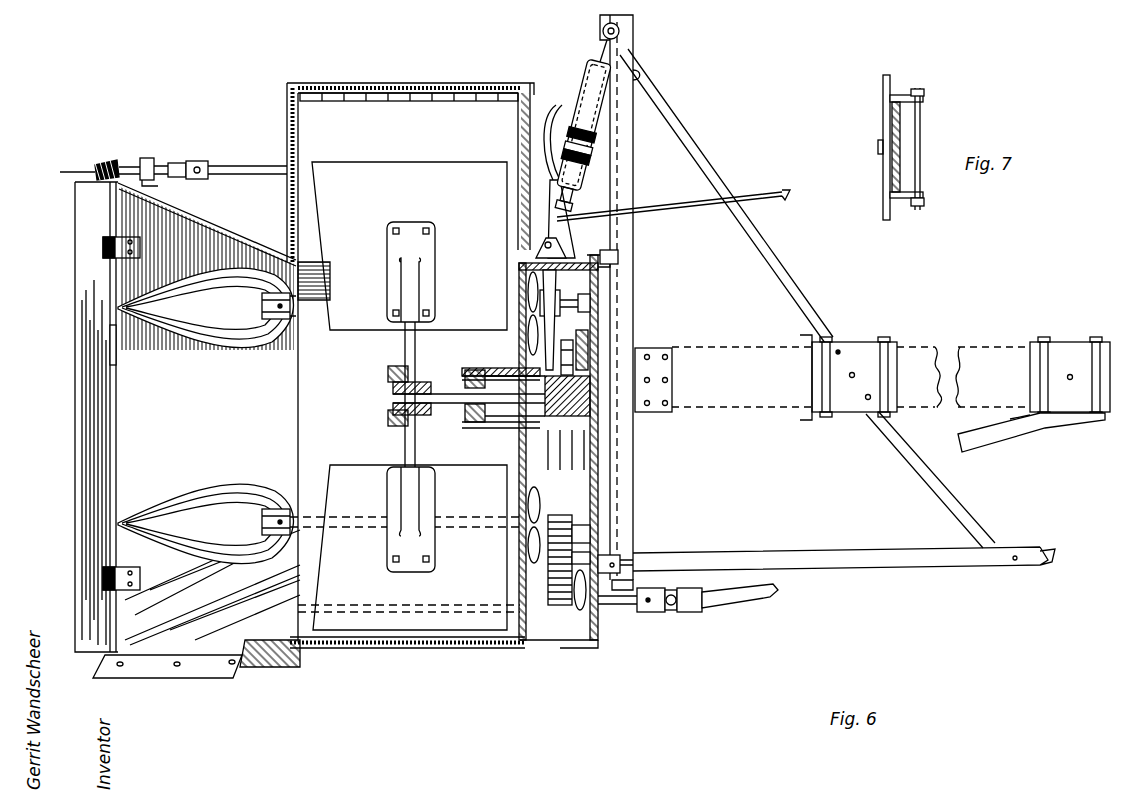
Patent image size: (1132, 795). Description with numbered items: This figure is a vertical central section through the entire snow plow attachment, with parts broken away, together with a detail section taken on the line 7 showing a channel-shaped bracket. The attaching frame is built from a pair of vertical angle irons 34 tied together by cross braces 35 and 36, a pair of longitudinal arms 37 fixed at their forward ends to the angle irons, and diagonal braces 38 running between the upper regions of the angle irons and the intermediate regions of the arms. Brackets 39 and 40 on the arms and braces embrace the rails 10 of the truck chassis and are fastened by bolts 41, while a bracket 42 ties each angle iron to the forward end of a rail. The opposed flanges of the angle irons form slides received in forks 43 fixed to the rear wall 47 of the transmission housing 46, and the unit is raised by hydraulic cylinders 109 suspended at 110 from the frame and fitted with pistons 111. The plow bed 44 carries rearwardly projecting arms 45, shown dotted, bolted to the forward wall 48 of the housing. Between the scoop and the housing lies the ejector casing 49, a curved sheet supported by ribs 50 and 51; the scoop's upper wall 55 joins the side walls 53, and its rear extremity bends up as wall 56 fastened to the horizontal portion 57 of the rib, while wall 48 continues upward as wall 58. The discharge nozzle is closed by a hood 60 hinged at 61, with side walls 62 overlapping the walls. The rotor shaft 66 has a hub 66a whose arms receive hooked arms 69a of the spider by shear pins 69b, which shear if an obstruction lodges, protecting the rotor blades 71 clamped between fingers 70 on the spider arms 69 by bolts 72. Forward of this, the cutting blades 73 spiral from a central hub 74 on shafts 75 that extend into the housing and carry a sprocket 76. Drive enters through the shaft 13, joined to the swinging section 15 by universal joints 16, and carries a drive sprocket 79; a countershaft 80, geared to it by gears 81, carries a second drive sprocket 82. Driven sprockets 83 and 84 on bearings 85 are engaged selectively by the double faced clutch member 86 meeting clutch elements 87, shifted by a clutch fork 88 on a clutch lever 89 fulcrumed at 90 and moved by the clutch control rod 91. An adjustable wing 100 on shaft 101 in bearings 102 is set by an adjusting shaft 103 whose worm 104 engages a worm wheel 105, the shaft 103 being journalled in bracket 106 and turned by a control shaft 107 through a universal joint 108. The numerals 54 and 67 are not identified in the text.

In FIG. 6, the section line 7 is at (835, 340).
In FIG. 6, the rails 10 is at (748, 410).
In FIG. 7, the rails 10 is at (900, 183).
In FIG. 6, the shaft 13 is at (610, 606).
In FIG. 6, the swinging section 15 is at (738, 596).
In FIG. 6, the universal joints 16 is at (660, 612).
In FIG. 6, the angle irons 34 is at (633, 236).
In FIG. 6, the cross brace 35 is at (633, 18).
In FIG. 6, the cross brace 36 is at (660, 553).
In FIG. 6, the longitudinal arms 37 is at (988, 440).
In FIG. 6, the diagonal braces 38 is at (770, 250).
In FIG. 7, the diagonal braces 38 is at (883, 112).
In FIG. 6, the brackets 39 is at (1058, 340).
In FIG. 6, the brackets 40 is at (860, 342).
In FIG. 7, the brackets 40 is at (920, 206).
In FIG. 7, the bolts 41 is at (920, 98).
In FIG. 6, the bracket 42 is at (672, 380).
In FIG. 6, the forks 43 is at (620, 258).
In FIG. 6, the plow bed 44 is at (288, 672).
In FIG. 6, the arms 45 is at (409, 547).
In FIG. 6, the transmission housing 46 is at (550, 650).
In FIG. 6, the rear wall 47 is at (598, 436).
In FIG. 6, the forward wall 48 is at (520, 488).
In FIG. 6, the ejector casing 49 is at (422, 648).
In FIG. 6, the rib 50 is at (318, 642).
In FIG. 6, the rib 51 is at (510, 650).
In FIG. 6, the side walls 53 is at (212, 532).
In FIG. 6, the cabinet left wall 54 is at (296, 457).
In FIG. 6, the upper wall 55 is at (215, 222).
In FIG. 6, the upwardly bent wall 56 is at (298, 118).
In FIG. 6, the horizontal portion 57 is at (300, 240).
In FIG. 6, the upward wall continuation 58 is at (518, 126).
In FIG. 6, the hood 60 is at (397, 84).
In FIG. 6, the hinge 61 is at (404, 101).
In FIG. 6, the side walls 62 is at (534, 95).
In FIG. 6, the rotor shaft 66 is at (437, 392).
In FIG. 6, the shaft hub 66a is at (393, 394).
In FIG. 6, the bearing 67 is at (465, 414).
In FIG. 6, the spider arms 69 is at (405, 343).
In FIG. 6, the hooked arms 69a is at (388, 374).
In FIG. 6, the shear pins 69b is at (388, 420).
In FIG. 6, the fingers 70 is at (413, 228).
In FIG. 6, the rotor blades 71 is at (409, 246).
In FIG. 6, the bolts 72 is at (430, 312).
In FIG. 6, the blades 73 is at (214, 343).
In FIG. 6, the central hub 74 is at (262, 320).
In FIG. 6, the shafts 75 is at (292, 320).
In FIG. 6, the sprocket 76 is at (520, 278).
In FIG. 6, the drive sprocket 79 is at (586, 648).
In FIG. 6, the countershaft 80 is at (580, 522).
In FIG. 6, the gears 81 is at (535, 545).
In FIG. 6, the drive sprocket 82 is at (520, 572).
In FIG. 6, the driven sprocket 83 is at (600, 338).
In FIG. 6, the driven sprocket 84 is at (520, 342).
In FIG. 6, the bearings 85 is at (520, 362).
In FIG. 6, the double faced clutch member 86 is at (508, 414).
In FIG. 6, the clutch elements 87 is at (560, 445).
In FIG. 6, the clutch fork 88 is at (600, 326).
In FIG. 6, the clutch lever 89 is at (560, 240).
In FIG. 6, the fulcrum 90 is at (590, 288).
In FIG. 6, the clutch control rod 91 is at (776, 186).
In FIG. 6, the adjustable wing 100 is at (75, 420).
In FIG. 6, the wing shaft 101 is at (110, 345).
In FIG. 6, the bearings 102 is at (103, 247).
In FIG. 6, the adjusting shaft 103 is at (175, 162).
In FIG. 6, the worm 104 is at (122, 160).
In FIG. 6, the worm wheel 105 is at (62, 172).
In FIG. 6, the bracket 106 is at (150, 158).
In FIG. 6, the control shaft 107 is at (236, 166).
In FIG. 6, the universal joint 108 is at (205, 161).
In FIG. 6, the cylinders 109 is at (590, 118).
In FIG. 6, the suspension point 110 is at (603, 33).
In FIG. 6, the pistons 111 is at (590, 150).